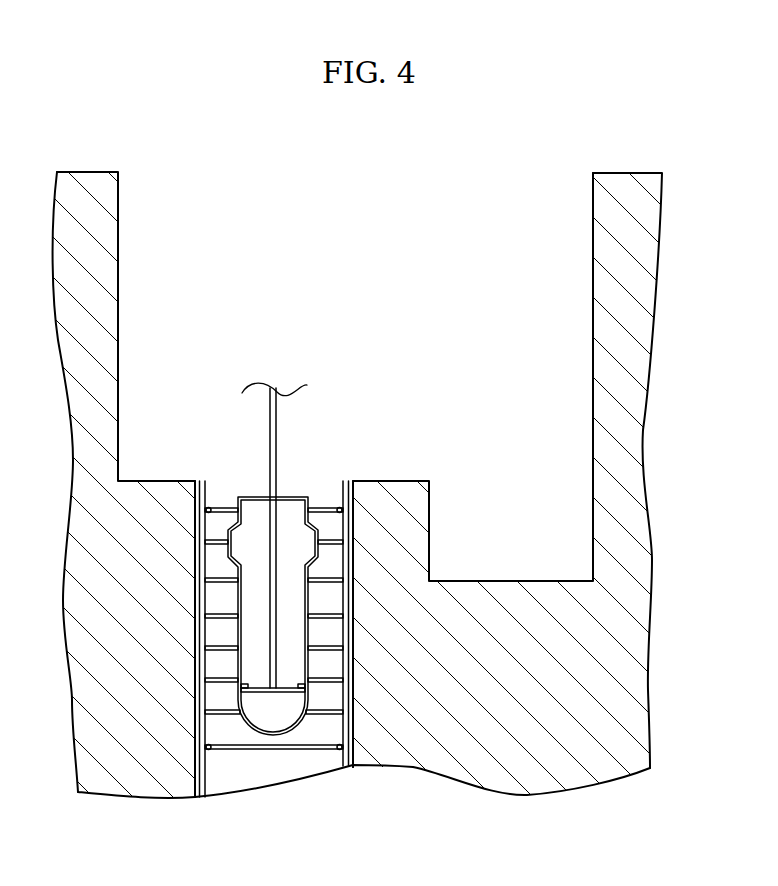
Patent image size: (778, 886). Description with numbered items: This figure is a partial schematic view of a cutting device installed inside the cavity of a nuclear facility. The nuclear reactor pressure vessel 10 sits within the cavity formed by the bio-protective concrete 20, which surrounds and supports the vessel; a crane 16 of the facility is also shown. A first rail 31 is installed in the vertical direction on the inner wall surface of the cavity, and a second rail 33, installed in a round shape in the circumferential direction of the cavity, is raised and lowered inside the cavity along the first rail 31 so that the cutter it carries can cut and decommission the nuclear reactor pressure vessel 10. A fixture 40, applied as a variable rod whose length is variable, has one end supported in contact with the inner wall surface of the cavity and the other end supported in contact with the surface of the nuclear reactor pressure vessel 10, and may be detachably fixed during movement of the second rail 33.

The nuclear reactor pressure vessel 10 is at (250, 748).
The crane 16 is at (269, 411).
The bio-protective concrete 20 is at (492, 732).
The first rail 31 is at (193, 640).
The second rail 33 is at (222, 505).
The fixture 40 is at (220, 548).